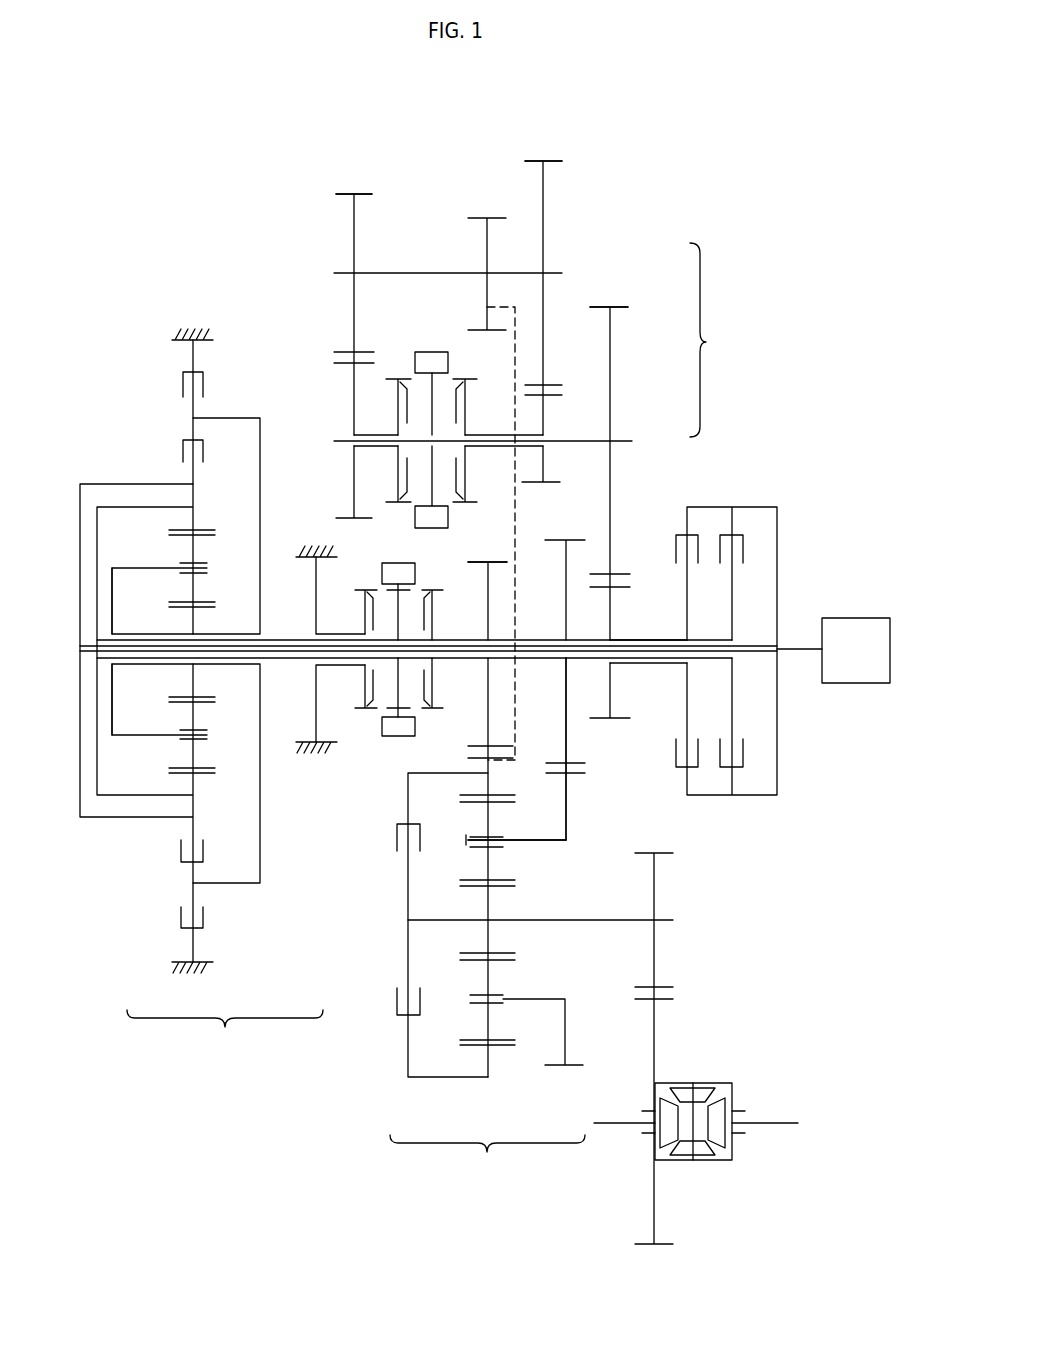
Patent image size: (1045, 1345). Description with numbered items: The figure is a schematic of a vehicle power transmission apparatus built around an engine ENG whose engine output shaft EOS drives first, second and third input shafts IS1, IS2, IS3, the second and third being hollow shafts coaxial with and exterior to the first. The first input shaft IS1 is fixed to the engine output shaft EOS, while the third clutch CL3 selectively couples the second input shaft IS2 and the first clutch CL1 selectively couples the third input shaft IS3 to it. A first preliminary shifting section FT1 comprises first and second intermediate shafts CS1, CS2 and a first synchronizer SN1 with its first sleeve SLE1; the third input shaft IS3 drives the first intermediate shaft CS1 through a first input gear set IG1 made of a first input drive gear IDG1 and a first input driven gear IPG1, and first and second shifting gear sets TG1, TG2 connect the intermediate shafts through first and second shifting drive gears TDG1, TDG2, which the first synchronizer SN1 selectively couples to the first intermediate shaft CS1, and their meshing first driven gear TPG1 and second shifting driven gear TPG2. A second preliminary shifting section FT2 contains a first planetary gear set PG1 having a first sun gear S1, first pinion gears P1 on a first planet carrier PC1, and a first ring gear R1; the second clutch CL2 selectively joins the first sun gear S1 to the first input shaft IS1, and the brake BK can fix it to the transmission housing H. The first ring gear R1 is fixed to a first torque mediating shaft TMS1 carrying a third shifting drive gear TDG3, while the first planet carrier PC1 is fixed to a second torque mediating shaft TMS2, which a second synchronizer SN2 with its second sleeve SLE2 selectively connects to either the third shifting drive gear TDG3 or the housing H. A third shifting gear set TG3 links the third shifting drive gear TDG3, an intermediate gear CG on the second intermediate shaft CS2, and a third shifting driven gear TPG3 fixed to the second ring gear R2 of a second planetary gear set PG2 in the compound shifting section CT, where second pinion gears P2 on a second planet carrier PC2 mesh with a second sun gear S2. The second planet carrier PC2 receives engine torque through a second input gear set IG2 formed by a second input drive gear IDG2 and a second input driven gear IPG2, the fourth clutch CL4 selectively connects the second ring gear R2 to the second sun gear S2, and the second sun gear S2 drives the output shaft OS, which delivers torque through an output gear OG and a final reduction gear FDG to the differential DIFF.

The first shifting gear set TG1 is at (555, 148).
The second shifting gear set TG2 is at (360, 185).
The third shifting gear set TG3 is at (484, 548).
The intermediate gear CG is at (488, 246).
The first driven gear TPG1 is at (545, 194).
The second shifting driven gear TPG2 is at (354, 238).
The third shifting driven gear TPG3 is at (488, 754).
The first intermediate shaft CS1 is at (585, 441).
The second intermediate shaft CS2 is at (423, 273).
The first input gear set IG1 is at (620, 300).
The second input gear set IG2 is at (582, 806).
The first preliminary shifting section FT1 is at (668, 473).
The second preliminary shifting section FT2 is at (208, 667).
The first synchronizer SN1 is at (418, 348).
The second synchronizer SN2 is at (362, 752).
The first sleeve SLE1 is at (438, 352).
The second sleeve SLE2 is at (396, 565).
The transmission housing H is at (188, 326).
The brake BK is at (172, 377).
The first input driven gear IPG1 is at (612, 350).
The second input driven gear IPG2 is at (568, 788).
The first shifting drive gear TDG1 is at (545, 404).
The second shifting drive gear TDG2 is at (354, 399).
The third shifting drive gear TDG3 is at (488, 618).
The first clutch CL1 is at (699, 522).
The second clutch CL2 is at (172, 442).
The third clutch CL3 is at (745, 522).
The fourth clutch CL4 is at (388, 1010).
The first planetary gear set PG1 is at (160, 546).
The second planetary gear set PG2 is at (450, 1055).
The first ring gear R1 is at (205, 530).
The second ring gear R2 is at (470, 797).
The first pinion gears P1 is at (200, 583).
The second pinion gears P2 is at (488, 863).
The first planet carrier PC1 is at (140, 568).
The second planet carrier PC2 is at (546, 840).
The first sun gear S1 is at (203, 607).
The second sun gear S2 is at (488, 903).
The first input drive gear IDG1 is at (610, 612).
The second input drive gear IDG2 is at (566, 580).
The first input shaft IS1 is at (556, 646).
The second input shaft IS2 is at (664, 663).
The third input shaft IS3 is at (664, 640).
The first torque mediating shaft TMS1 is at (289, 658).
The second torque mediating shaft TMS2 is at (289, 640).
The engine ENG is at (856, 650).
The engine output shaft EOS is at (797, 651).
The output shaft OS is at (600, 920).
The output gear OG is at (655, 954).
The final reduction gear FDG is at (655, 1031).
The differential DIFF is at (750, 1092).
The compound shifting section CT is at (455, 982).